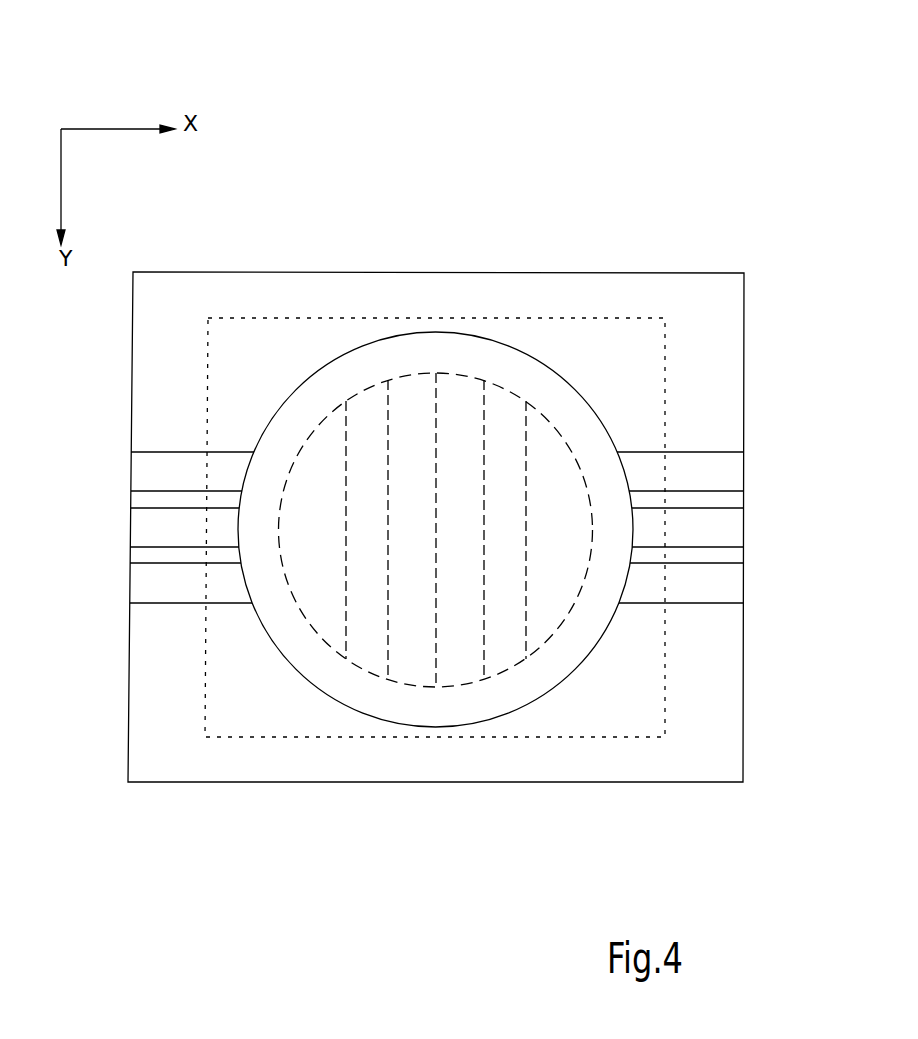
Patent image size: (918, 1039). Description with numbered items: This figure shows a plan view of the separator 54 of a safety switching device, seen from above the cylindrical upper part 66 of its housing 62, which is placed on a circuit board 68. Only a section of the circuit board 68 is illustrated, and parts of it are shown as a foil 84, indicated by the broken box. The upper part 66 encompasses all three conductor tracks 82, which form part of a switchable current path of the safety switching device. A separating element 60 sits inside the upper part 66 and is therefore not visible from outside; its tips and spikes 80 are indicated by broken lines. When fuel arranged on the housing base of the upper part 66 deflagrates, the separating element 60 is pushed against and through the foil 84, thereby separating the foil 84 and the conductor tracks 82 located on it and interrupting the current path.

The separator 54 is at (367, 198).
The circuit board 68 is at (641, 288).
The foil 84 is at (246, 355).
The housing 62 is at (347, 722).
The separating element 60 is at (300, 607).
The upper part 66 is at (490, 695).
The tips and spikes 80 is at (388, 402).
The conductor tracks 82 is at (708, 477).